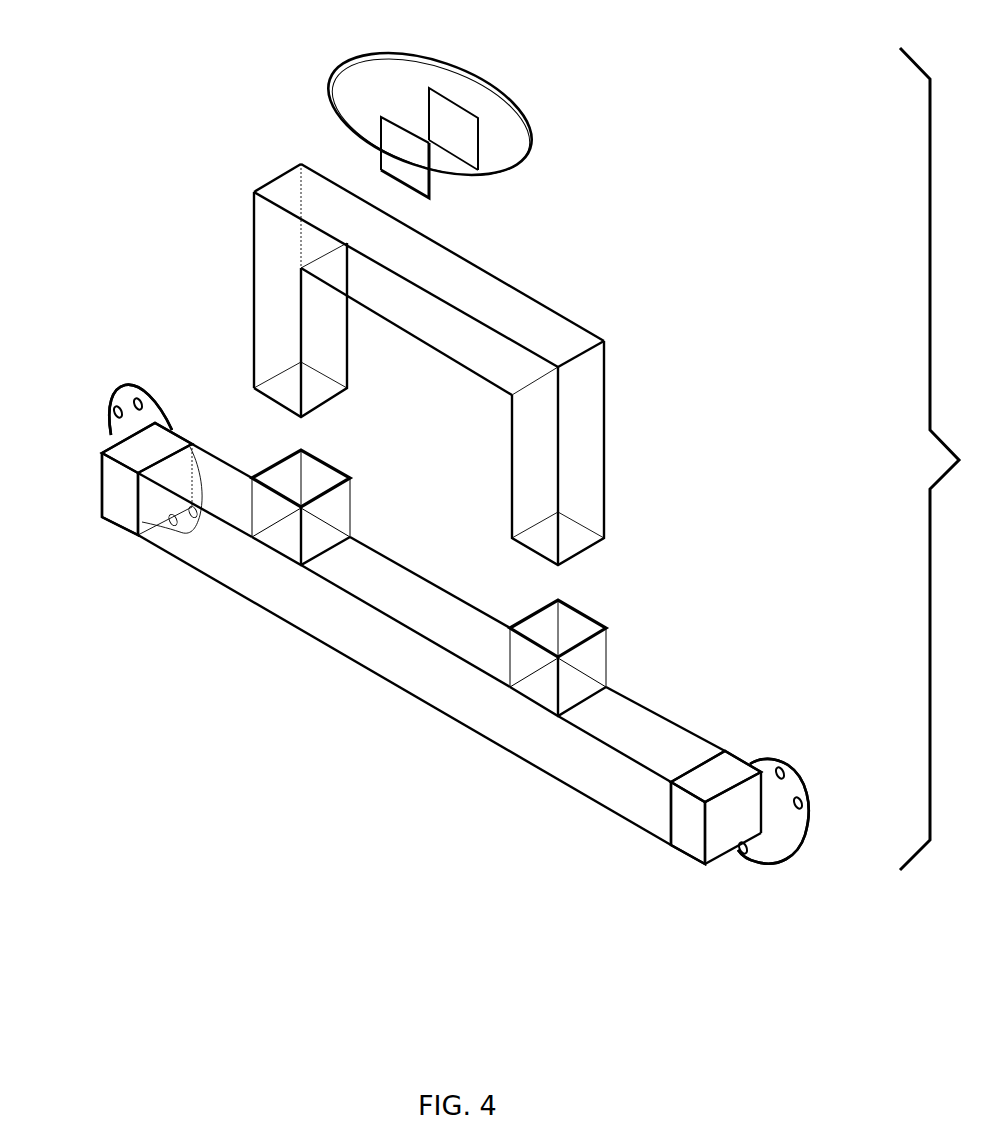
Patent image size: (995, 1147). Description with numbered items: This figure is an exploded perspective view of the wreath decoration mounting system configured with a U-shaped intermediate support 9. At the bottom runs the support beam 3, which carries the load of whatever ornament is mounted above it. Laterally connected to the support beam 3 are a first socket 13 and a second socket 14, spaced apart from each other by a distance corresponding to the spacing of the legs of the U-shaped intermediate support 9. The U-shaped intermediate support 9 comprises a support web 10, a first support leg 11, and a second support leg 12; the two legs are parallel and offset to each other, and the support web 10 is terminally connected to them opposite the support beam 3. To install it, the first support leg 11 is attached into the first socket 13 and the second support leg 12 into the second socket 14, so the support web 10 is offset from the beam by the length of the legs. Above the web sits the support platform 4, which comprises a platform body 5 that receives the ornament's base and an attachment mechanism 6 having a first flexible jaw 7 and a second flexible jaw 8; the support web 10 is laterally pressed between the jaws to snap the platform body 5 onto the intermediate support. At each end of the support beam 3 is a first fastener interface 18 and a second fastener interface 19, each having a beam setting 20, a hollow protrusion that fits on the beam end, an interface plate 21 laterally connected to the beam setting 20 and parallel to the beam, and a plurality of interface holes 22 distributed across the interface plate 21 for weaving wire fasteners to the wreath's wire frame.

The support beam 3 is at (655, 724).
The support platform 4 is at (584, 97).
The platform body 5 is at (347, 74).
The attachment mechanism 6 is at (448, 129).
The first flexible jaw 7 is at (430, 200).
The second flexible jaw 8 is at (453, 110).
The U-shaped intermediate support 9 is at (708, 384).
The support web 10 is at (520, 301).
The first support leg 11 is at (264, 259).
The second support leg 12 is at (592, 461).
The first socket 13 is at (318, 470).
The second socket 14 is at (577, 623).
The first fastener interface 18 is at (103, 356).
The second fastener interface 19 is at (776, 925).
The beam setting 20 is at (128, 520).
The interface plate 21 is at (115, 423).
The plurality of interface holes 22 is at (146, 398).